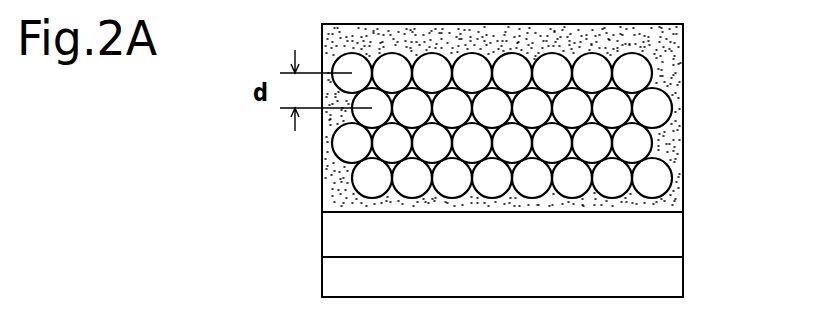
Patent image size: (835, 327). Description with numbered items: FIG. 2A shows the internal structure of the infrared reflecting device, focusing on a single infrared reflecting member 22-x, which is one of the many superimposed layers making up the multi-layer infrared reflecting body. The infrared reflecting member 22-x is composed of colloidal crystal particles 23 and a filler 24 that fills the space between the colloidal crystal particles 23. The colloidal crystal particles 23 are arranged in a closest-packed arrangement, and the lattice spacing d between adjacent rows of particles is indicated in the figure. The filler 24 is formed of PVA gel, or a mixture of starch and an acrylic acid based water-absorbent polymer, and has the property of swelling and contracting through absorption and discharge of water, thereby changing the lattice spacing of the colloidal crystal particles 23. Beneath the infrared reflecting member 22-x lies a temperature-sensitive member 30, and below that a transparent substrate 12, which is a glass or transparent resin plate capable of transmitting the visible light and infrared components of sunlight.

The infrared reflecting member 22-x is at (684, 38).
The colloidal crystal particles 23 is at (666, 107).
The filler 24 is at (678, 157).
The temperature-sensitive member 30 is at (333, 236).
The transparent substrate 12 is at (330, 280).